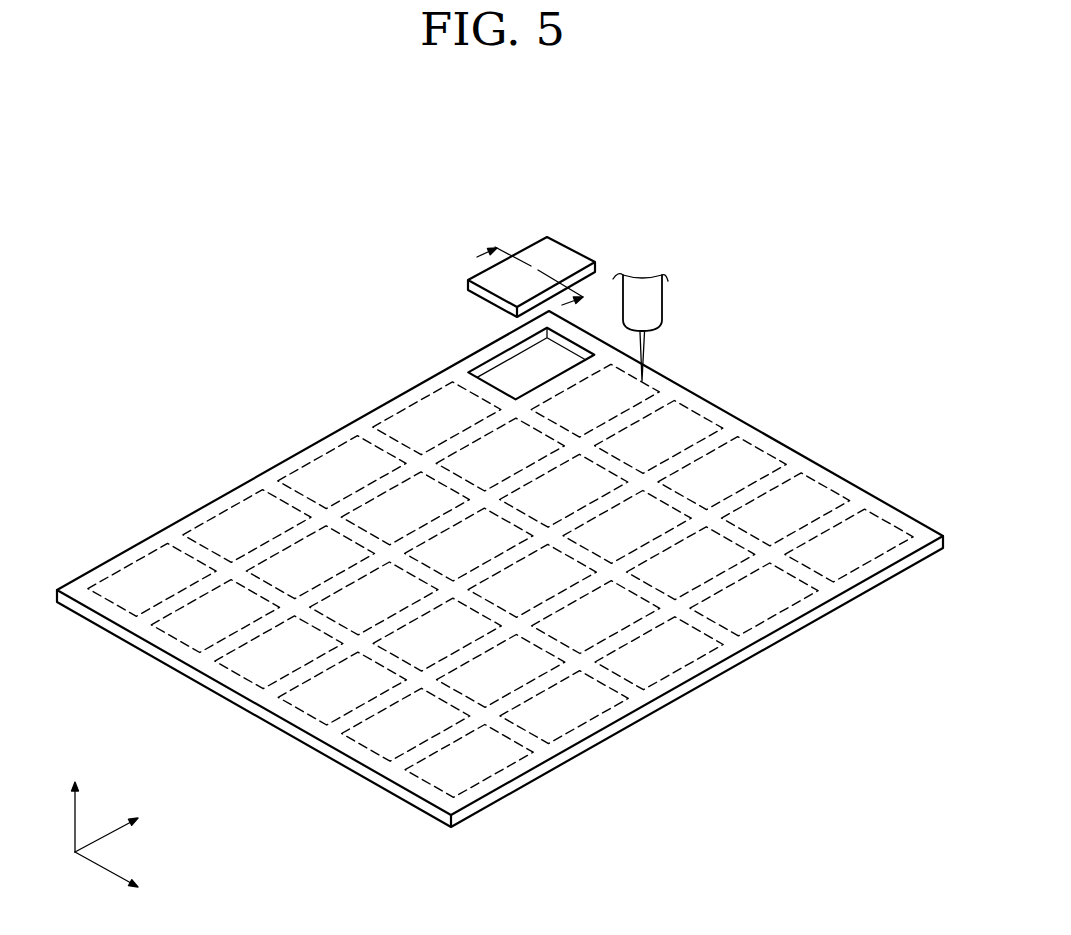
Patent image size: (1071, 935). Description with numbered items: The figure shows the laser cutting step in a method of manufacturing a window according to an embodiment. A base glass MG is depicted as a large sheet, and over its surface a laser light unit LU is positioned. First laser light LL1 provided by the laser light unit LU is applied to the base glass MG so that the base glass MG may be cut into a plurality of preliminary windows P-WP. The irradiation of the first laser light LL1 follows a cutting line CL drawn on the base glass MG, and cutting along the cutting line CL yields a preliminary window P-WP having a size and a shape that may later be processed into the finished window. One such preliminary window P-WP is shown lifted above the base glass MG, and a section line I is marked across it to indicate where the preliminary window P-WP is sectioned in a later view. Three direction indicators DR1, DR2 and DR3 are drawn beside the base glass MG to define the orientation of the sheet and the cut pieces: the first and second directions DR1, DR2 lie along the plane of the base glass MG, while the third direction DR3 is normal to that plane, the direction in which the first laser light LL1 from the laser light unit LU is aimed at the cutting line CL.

The cutting line CL is at (433, 395).
The preliminary window P-WP is at (563, 253).
The section line I-I' I is at (532, 280).
The laser light unit LU is at (648, 308).
The first laser light LL1 is at (643, 345).
The base glass MG is at (837, 283).
The first direction DR1 is at (129, 882).
The second direction DR2 is at (127, 823).
The third direction DR3 is at (76, 802).